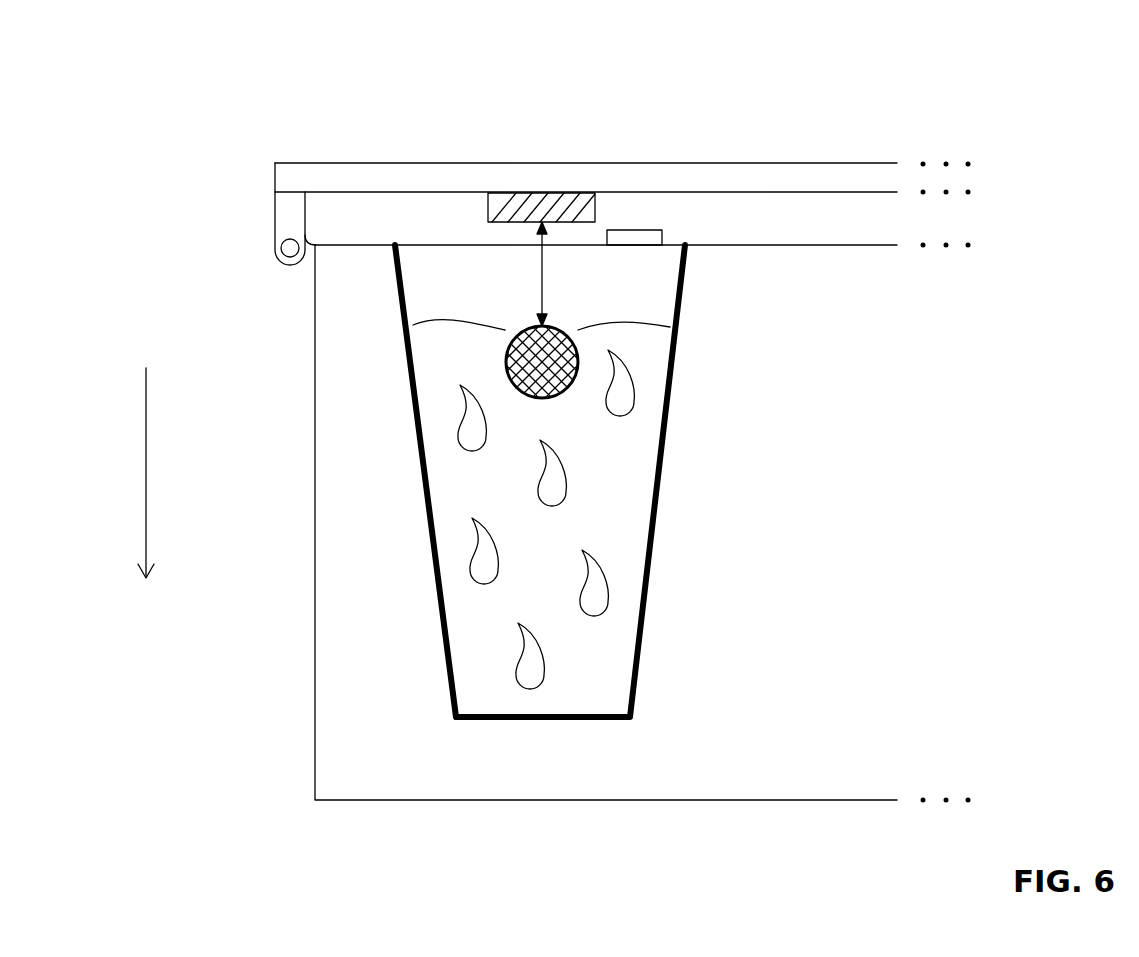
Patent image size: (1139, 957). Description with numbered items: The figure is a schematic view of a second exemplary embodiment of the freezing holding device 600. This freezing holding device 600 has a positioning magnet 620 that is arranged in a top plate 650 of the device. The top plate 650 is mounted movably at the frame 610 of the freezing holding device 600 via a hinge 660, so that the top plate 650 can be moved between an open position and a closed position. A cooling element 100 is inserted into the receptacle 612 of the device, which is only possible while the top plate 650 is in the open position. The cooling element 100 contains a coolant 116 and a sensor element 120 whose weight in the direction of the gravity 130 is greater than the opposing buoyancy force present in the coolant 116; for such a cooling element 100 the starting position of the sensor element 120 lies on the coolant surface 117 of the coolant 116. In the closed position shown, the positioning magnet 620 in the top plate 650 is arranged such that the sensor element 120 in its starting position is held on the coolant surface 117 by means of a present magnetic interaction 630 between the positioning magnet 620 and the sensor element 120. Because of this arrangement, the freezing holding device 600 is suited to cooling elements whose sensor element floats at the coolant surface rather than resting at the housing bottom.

The cooling element 100 is at (430, 225).
The coolant 116 is at (630, 487).
The coolant surface 117 is at (672, 327).
The sensor element 120 is at (566, 368).
The direction of the gravity 130 is at (145, 480).
The freezing holding device 600 is at (915, 138).
The frame 610 is at (315, 382).
The receptacle 612 is at (693, 240).
The positioning magnet 620 is at (563, 207).
The magnetic interaction 630 is at (542, 283).
The top plate 650 is at (657, 177).
The hinge 660 is at (280, 218).